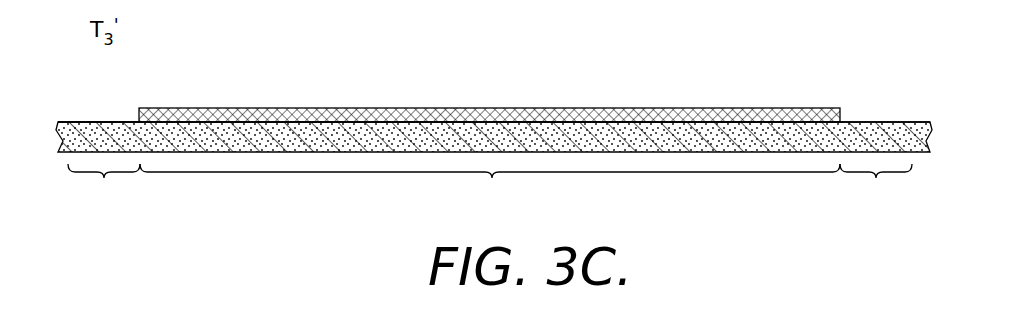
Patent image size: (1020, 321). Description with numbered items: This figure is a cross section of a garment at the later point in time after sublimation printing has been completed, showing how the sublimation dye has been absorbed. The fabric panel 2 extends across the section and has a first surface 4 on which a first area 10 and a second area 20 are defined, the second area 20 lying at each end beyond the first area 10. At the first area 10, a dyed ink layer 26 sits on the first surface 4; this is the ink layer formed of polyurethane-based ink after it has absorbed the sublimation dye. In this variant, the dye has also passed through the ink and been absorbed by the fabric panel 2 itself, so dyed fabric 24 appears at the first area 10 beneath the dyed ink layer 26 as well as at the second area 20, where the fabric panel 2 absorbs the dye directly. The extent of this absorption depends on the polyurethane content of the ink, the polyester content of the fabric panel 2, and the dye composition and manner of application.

The fabric panel 2 is at (50, 124).
The first surface 4 is at (61, 121).
The dyed fabric 24 is at (78, 122).
The dyed ink layer 26 is at (197, 108).
The first area 10 is at (490, 187).
The second area 20 is at (490, 187).